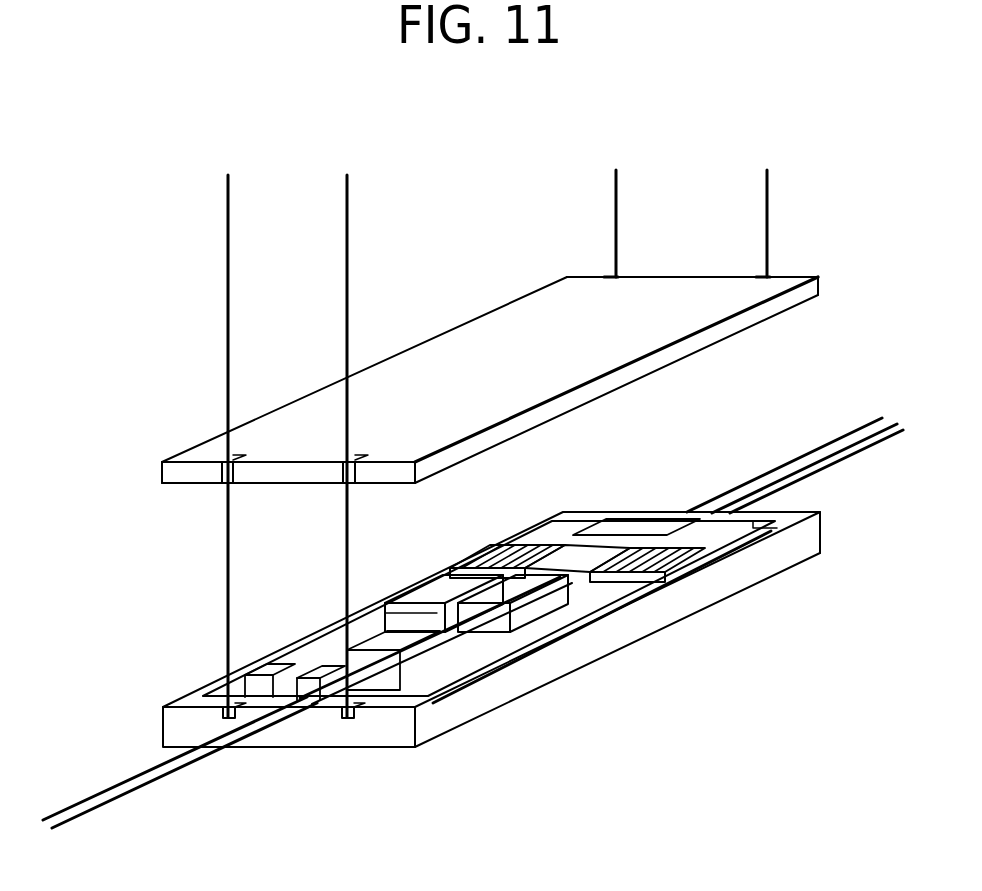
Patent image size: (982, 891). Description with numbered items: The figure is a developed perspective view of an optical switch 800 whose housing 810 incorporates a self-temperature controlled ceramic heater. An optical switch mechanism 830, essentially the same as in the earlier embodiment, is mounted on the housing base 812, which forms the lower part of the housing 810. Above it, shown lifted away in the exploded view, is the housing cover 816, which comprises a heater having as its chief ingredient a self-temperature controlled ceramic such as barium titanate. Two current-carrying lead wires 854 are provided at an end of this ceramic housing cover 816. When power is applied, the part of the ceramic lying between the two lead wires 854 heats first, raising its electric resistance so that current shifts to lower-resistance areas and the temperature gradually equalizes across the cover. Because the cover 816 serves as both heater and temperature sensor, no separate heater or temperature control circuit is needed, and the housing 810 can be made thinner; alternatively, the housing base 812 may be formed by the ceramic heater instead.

The optical switch 800 is at (606, 748).
The housing 810 is at (741, 390).
The housing base 812 is at (698, 587).
The housing cover 816 is at (590, 384).
The optical switch mechanism 830 is at (580, 573).
The current-carrying lead wires 854 is at (767, 200).